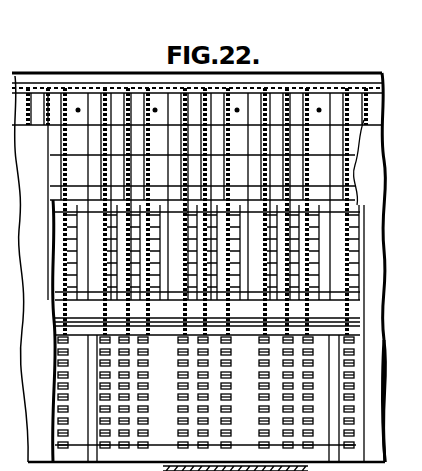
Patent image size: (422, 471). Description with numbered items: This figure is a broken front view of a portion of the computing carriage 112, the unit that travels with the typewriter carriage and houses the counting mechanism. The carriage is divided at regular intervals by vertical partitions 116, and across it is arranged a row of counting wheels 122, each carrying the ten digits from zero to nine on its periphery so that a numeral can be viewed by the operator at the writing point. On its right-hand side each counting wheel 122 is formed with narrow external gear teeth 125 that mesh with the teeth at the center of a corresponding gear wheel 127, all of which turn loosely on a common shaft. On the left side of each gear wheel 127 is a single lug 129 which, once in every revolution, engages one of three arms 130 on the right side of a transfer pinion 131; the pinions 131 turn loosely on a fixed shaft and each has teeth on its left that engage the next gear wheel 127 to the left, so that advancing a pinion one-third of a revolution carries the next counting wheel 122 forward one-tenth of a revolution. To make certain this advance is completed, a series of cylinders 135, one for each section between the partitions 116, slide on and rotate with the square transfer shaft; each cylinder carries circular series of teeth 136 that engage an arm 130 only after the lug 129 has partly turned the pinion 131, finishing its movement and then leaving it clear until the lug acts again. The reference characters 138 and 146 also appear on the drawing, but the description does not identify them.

The computing carriage 112 is at (381, 373).
The vertical partitions 116 is at (152, 92).
The counting wheels 122 is at (52, 90).
The external gear teeth 125 is at (308, 92).
The gear wheel 127 is at (358, 241).
The lug 129 is at (103, 268).
The arms 130 is at (167, 340).
The transfer pinion 131 is at (58, 366).
The cylinders 135 is at (206, 393).
The teeth 136 is at (354, 413).
The rack carrier 138 is at (68, 237).
The side frame 146 is at (402, 395).